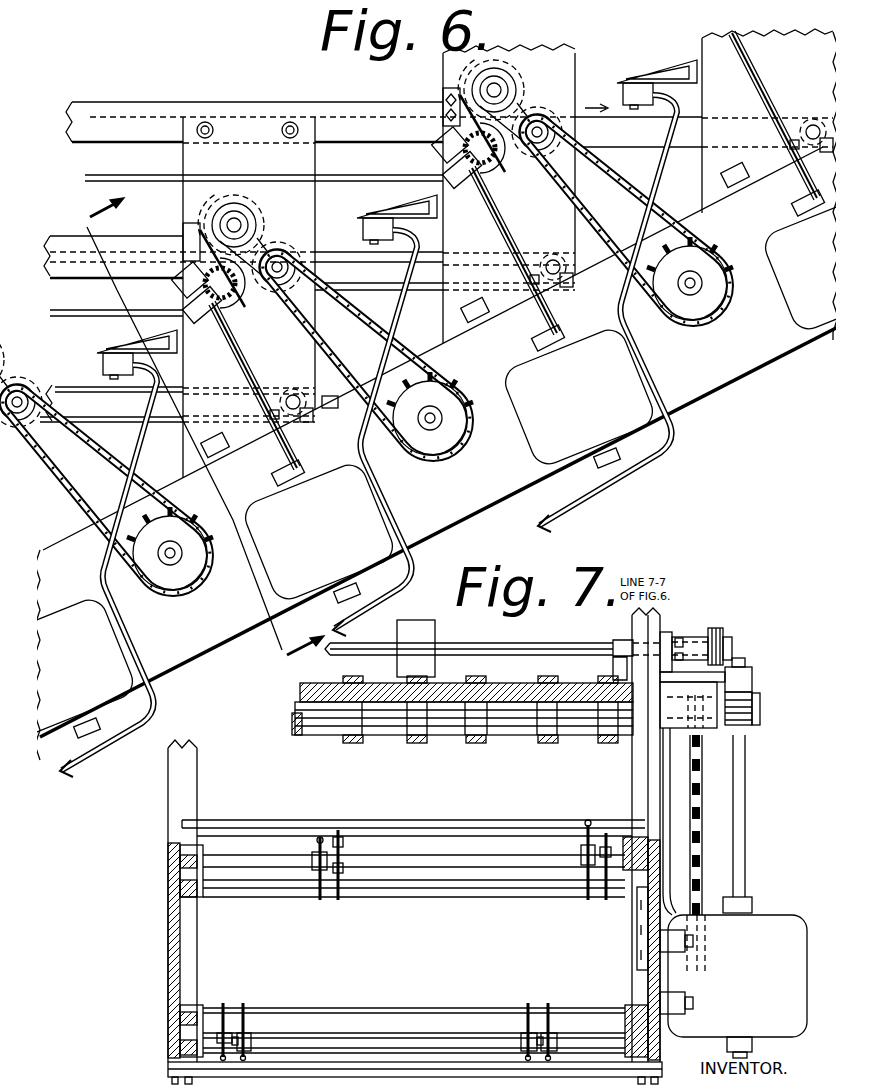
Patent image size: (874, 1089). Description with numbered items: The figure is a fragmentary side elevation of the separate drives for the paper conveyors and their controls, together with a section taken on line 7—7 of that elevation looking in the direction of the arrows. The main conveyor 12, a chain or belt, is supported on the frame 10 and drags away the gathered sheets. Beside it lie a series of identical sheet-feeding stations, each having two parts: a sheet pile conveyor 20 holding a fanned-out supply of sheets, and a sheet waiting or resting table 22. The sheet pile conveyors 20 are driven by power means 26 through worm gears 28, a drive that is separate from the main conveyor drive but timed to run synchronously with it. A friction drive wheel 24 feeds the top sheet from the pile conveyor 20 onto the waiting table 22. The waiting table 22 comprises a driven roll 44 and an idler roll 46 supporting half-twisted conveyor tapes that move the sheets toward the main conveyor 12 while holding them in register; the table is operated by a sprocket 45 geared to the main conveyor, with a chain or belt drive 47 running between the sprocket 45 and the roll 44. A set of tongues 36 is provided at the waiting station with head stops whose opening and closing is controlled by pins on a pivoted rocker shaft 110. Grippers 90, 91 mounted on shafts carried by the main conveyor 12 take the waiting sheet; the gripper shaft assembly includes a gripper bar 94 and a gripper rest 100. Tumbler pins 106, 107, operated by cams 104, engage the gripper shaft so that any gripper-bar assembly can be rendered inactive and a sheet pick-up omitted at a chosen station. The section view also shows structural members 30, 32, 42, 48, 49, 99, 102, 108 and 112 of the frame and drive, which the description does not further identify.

In FIG. 6, the section line 7— 7 is at (196, 438).
In FIG. 6, the frame 10 is at (193, 648).
In FIG. 7, the frame 10 is at (168, 975).
In FIG. 7, the main conveyor 12 is at (170, 887).
In FIG. 6, the sheet pile conveyor 20 is at (200, 128).
In FIG. 7, the sheet pile conveyor 20 is at (490, 687).
In FIG. 6, the sheet waiting table 22 is at (365, 235).
In FIG. 6, the friction drive wheel 24 is at (520, 80).
In FIG. 7, the friction drive wheel 24 is at (435, 640).
In FIG. 6, the power means 26 is at (780, 245).
In FIG. 7, the power means 26 is at (787, 930).
In FIG. 6, the worm gear 28 is at (443, 160).
In FIG. 7, the worm gear 28 is at (760, 724).
In FIG. 6, the conveyor chain 30 is at (97, 117).
In FIG. 7, the conveyor chain 30 is at (380, 680).
In FIG. 6, the rod / slat bar 32 is at (492, 170).
In FIG. 7, the rod / slat bar 32 is at (445, 738).
In FIG. 6, the tongue 36 is at (320, 360).
In FIG. 6, the bracket 42 is at (620, 88).
In FIG. 6, the driven roll 44 is at (543, 115).
In FIG. 7, the driven roll 44 is at (717, 732).
In FIG. 6, the sprocket 45 is at (705, 312).
In FIG. 7, the sprocket 45 is at (705, 893).
In FIG. 6, the idler roll 46 is at (813, 125).
In FIG. 6, the chain or belt drive 47 is at (685, 188).
In FIG. 7, the chain or belt drive 47 is at (705, 812).
In FIG. 7, the slotted bar 48 is at (637, 958).
In FIG. 6, the shaft 49 is at (435, 412).
In FIG. 7, the gripper 90 is at (318, 905).
In FIG. 7, the gripper 91 is at (338, 905).
In FIG. 7, the gripper bar 94 is at (418, 1013).
In FIG. 7, the clamp pin 99 is at (203, 1003).
In FIG. 7, the gripper rest 100 is at (435, 897).
In FIG. 7, the bottom rod 102 is at (485, 1072).
In FIG. 7, the cam 104 is at (582, 834).
In FIG. 7, the tumbler pin 106 is at (320, 832).
In FIG. 7, the tumbler pin 107 is at (345, 845).
In FIG. 7, the top bar 108 is at (398, 812).
In FIG. 6, the rocker shaft 110 is at (330, 410).
In FIG. 6, the rail 112 is at (135, 102).
In FIG. 7, the rail 112 is at (605, 663).